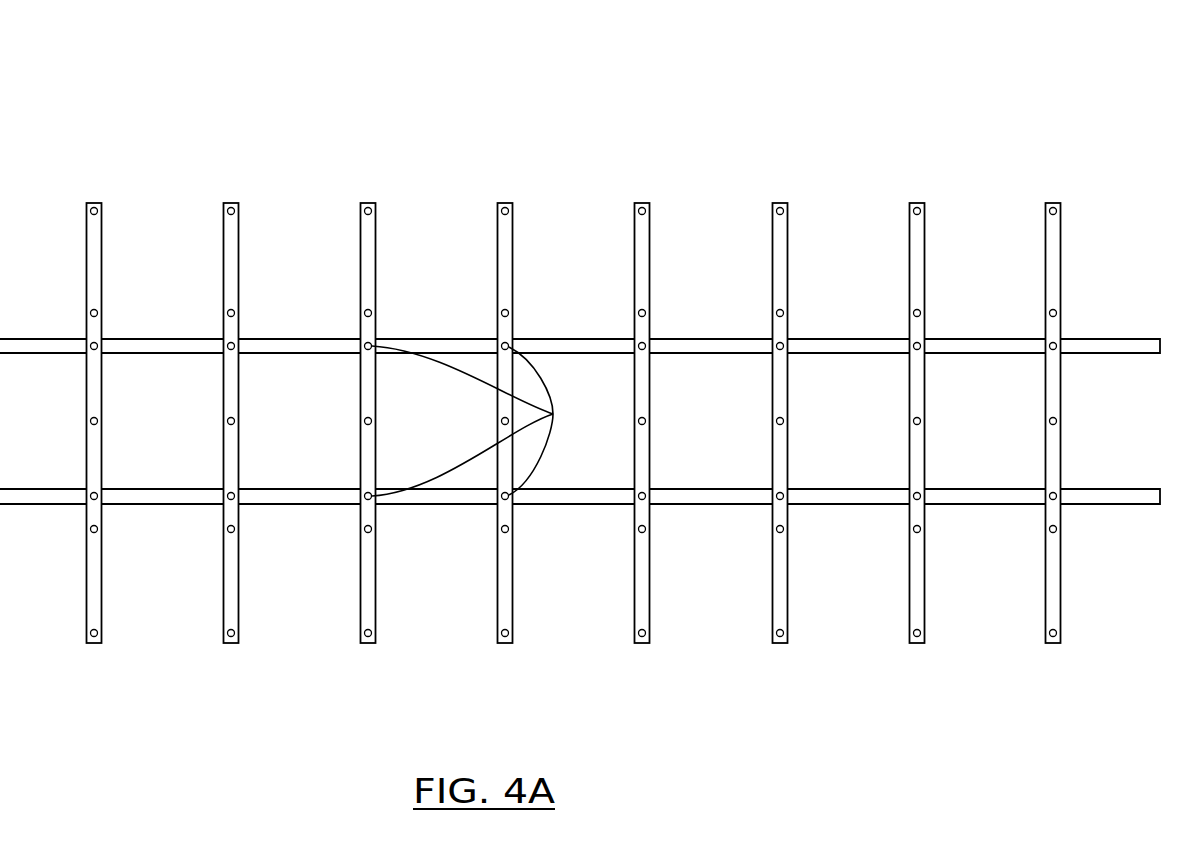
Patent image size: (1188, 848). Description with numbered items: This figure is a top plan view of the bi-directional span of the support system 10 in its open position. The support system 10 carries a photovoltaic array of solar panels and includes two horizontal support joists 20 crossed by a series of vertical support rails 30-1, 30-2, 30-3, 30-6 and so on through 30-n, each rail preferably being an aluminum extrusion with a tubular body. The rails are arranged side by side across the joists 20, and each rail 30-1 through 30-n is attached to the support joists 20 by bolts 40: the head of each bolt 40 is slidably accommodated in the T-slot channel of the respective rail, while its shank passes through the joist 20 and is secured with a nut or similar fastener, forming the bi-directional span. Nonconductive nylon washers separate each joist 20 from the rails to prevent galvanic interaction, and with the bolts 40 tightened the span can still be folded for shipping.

The support system 10 is at (232, 98).
The horizontal joist 20 is at (993, 338).
The vertical support rail 30-1 is at (97, 643).
The vertical support rail 30-2 is at (233, 643).
The vertical support rail 30-3 is at (370, 643).
The vertical support rail 30-6 is at (779, 643).
The vertical support rail 30-n is at (1050, 202).
The bolt 40 is at (480, 421).